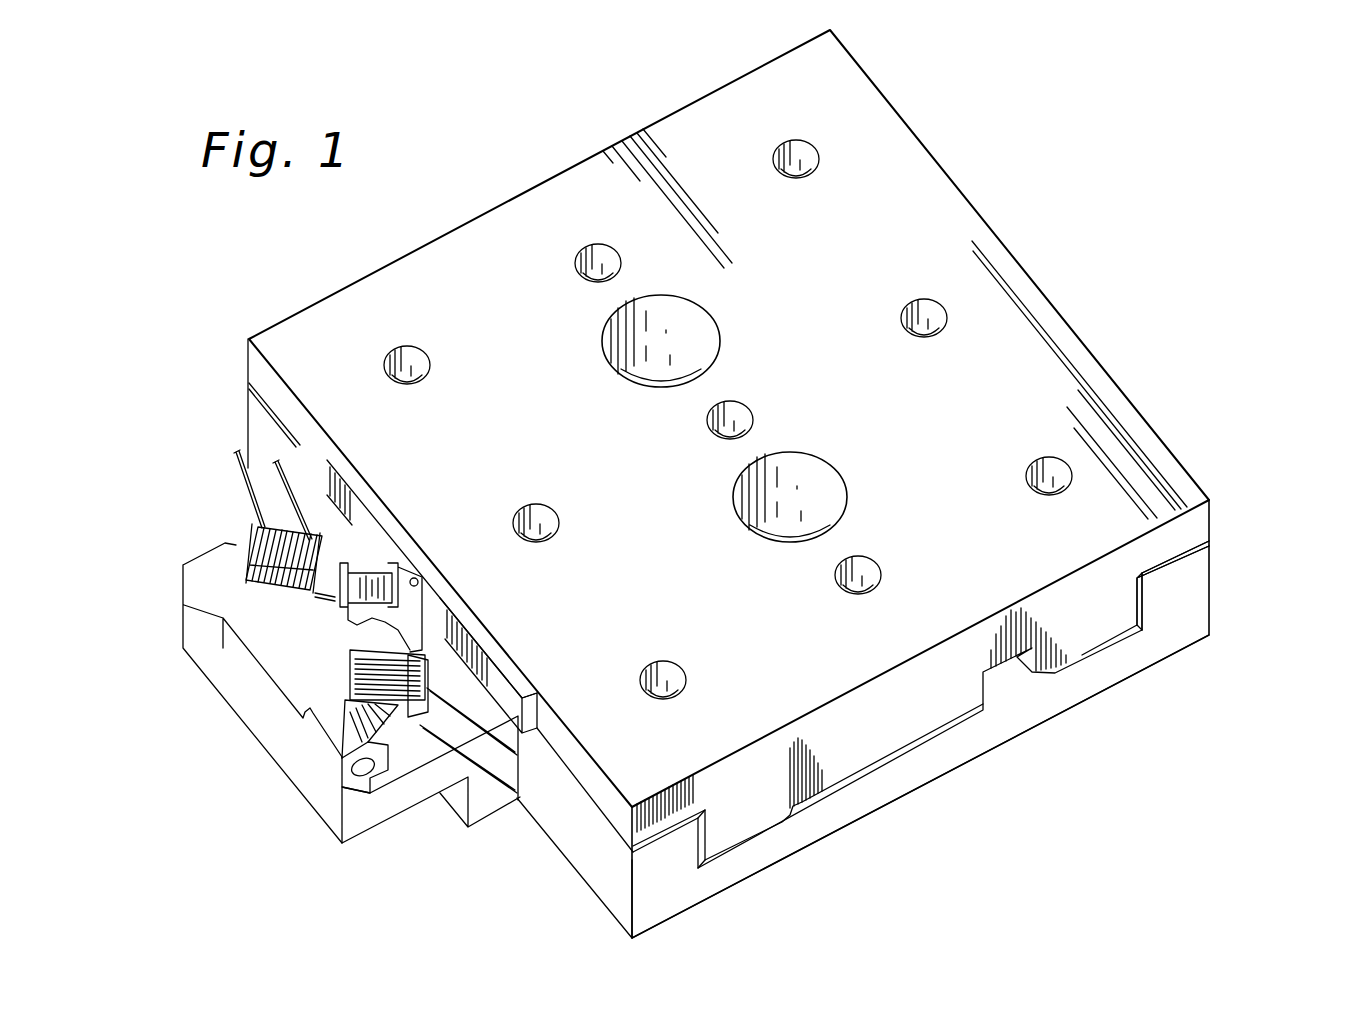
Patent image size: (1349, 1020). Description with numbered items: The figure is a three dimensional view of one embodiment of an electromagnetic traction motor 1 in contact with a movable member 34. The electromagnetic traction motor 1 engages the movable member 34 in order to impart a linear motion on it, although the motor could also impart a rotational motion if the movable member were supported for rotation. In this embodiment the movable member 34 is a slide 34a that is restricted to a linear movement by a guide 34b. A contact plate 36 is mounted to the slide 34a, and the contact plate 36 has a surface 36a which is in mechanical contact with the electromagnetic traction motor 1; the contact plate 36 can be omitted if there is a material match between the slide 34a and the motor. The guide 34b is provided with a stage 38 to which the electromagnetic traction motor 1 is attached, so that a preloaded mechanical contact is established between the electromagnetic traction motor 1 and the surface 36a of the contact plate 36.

The electromagnetic traction motor 1 is at (320, 667).
The movable member 34 is at (915, 243).
The slide 34a is at (1190, 530).
The guide 34b is at (682, 885).
The contact plate 36 is at (518, 677).
The surface 36a is at (493, 675).
The stage 38 is at (492, 807).